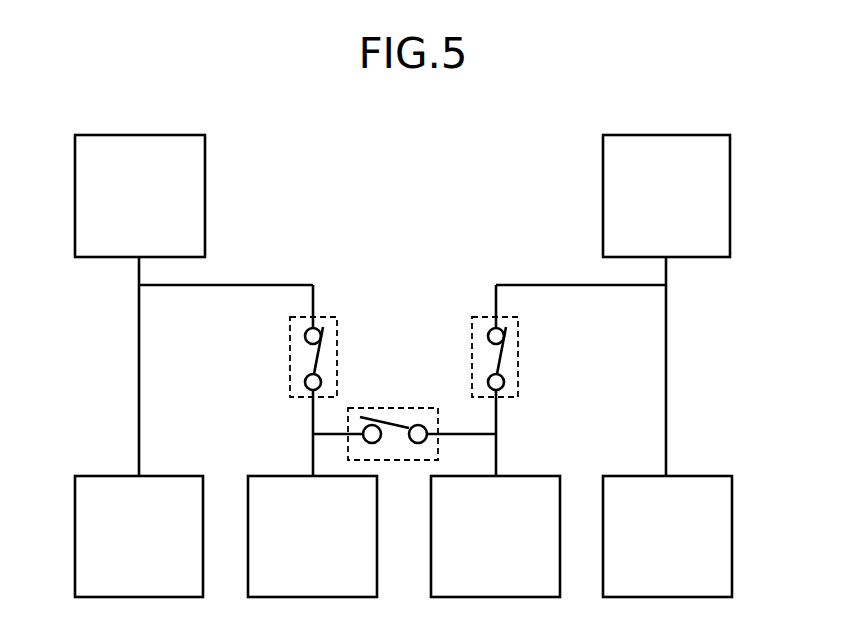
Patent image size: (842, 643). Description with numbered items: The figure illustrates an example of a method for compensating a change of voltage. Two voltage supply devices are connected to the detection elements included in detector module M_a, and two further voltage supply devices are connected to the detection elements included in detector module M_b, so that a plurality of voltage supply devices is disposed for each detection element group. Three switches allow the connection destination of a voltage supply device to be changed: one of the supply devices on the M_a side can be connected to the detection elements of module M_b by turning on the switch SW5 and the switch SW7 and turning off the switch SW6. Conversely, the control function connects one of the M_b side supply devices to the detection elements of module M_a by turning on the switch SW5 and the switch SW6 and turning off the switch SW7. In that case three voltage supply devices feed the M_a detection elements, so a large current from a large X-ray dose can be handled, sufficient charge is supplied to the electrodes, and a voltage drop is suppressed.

The switch SW5 is at (395, 407).
The switch SW6 is at (325, 316).
The switch SW7 is at (483, 316).